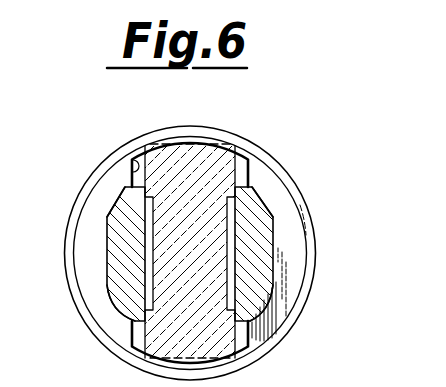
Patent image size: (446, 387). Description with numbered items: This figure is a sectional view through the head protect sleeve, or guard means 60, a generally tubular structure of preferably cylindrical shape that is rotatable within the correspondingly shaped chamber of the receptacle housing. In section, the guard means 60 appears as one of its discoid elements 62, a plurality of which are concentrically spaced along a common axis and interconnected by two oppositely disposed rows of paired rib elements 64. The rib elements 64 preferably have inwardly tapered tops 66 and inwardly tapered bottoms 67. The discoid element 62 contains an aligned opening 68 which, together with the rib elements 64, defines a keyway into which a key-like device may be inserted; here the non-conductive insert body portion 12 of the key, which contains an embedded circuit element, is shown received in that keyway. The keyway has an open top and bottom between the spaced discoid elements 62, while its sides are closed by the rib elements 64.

The insert body portion 12 is at (207, 147).
The contact pin protect sleeve or guard means 60 is at (275, 138).
The discoid elements 62 is at (80, 315).
The rib elements 64 is at (107, 263).
The inwardly tapered tops 66 is at (118, 207).
The inwardly tapered bottoms 67 is at (115, 310).
The aligned openings 68 is at (132, 158).